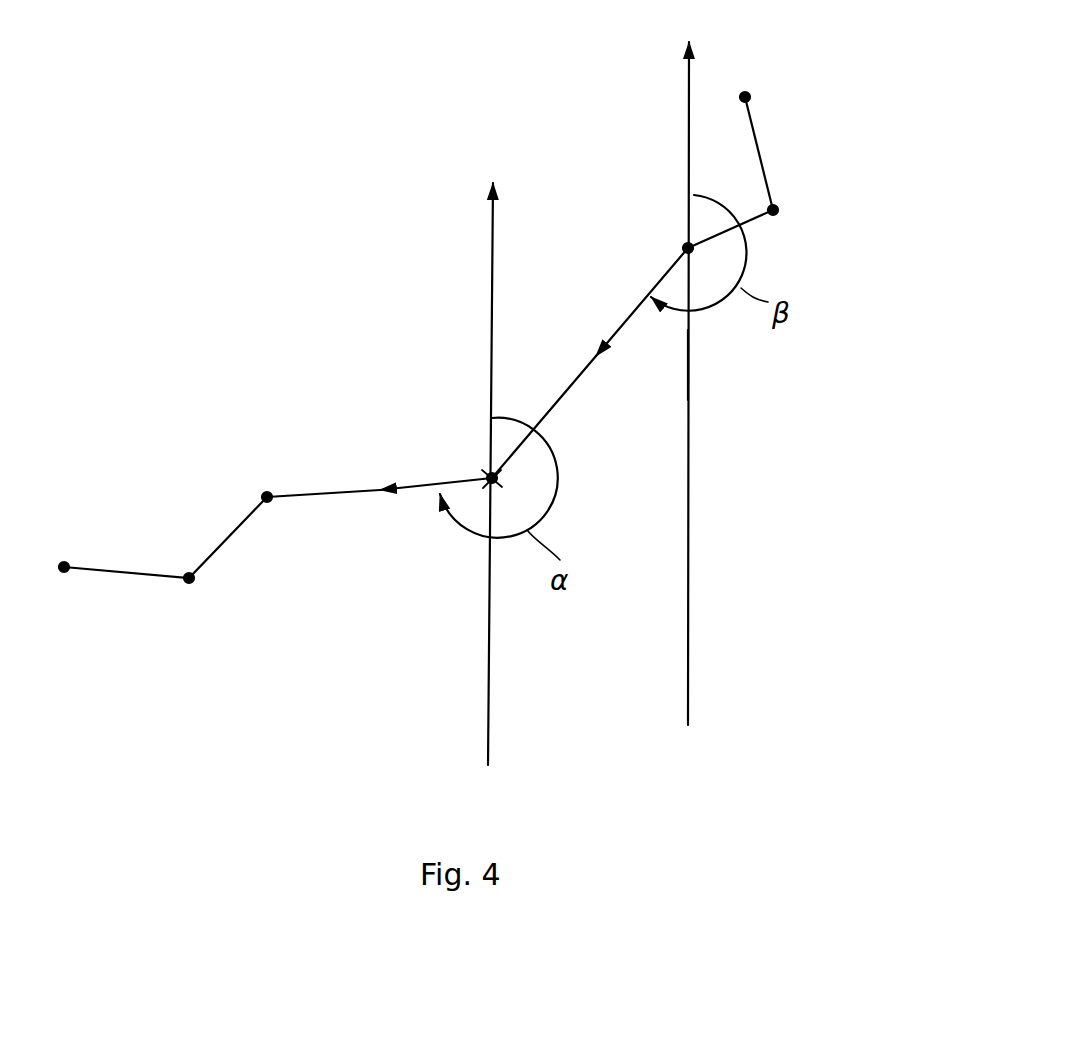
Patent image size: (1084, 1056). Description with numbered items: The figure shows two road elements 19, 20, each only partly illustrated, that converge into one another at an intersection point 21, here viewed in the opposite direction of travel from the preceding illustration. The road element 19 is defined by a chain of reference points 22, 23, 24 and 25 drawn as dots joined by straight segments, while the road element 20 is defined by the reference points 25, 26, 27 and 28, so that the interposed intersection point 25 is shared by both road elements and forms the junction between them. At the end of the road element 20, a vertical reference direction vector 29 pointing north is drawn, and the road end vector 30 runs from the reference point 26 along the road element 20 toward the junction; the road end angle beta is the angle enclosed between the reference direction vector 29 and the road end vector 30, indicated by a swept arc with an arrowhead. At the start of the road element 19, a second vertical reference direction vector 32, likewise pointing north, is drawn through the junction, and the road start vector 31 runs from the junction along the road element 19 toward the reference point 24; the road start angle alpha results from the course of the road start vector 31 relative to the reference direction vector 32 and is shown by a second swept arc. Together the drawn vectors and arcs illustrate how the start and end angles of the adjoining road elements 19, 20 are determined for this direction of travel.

The road element 19 is at (311, 568).
The road element 20 is at (709, 350).
The intersection point 21 is at (490, 476).
The reference point 22 is at (64, 565).
The reference point 23 is at (188, 583).
The reference point 24 is at (262, 493).
The interposed intersection point 25 is at (549, 497).
The reference point 26 is at (684, 244).
The reference point 27 is at (777, 213).
The reference point 28 is at (748, 95).
The reference direction vector 29 is at (688, 612).
The road end vector 30 is at (610, 333).
The road start vector 31 is at (398, 478).
The reference direction vector 32 is at (490, 280).